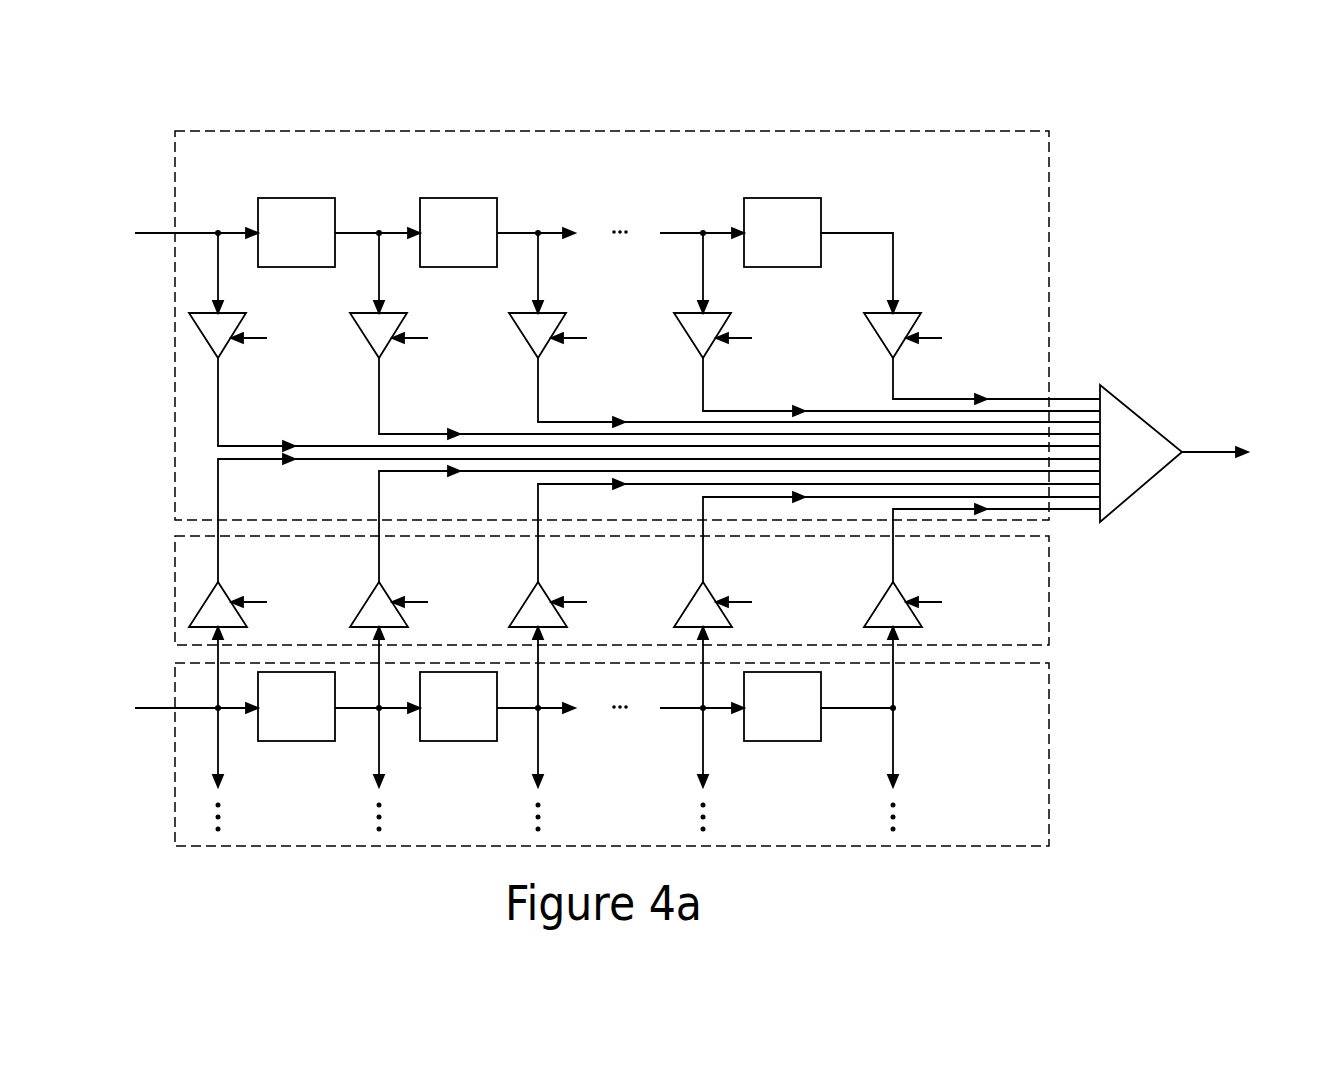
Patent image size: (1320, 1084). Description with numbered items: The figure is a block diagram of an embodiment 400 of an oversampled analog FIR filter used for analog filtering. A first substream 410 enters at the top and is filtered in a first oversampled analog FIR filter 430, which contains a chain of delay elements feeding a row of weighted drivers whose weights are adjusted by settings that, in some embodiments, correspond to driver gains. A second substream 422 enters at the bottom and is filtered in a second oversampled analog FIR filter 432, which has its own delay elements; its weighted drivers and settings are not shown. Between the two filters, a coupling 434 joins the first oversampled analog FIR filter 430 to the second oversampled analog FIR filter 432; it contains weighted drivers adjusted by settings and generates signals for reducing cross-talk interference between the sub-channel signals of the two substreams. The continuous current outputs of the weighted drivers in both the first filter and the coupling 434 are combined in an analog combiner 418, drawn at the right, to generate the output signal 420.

The embodiment of the oversampled analog FIR filter 400 is at (549, 103).
The first substream 410 is at (174, 232).
The analog combiner 418 is at (1140, 416).
The output signal 420 is at (1239, 455).
The second substream 422 is at (174, 707).
The first oversampled analog FIR filter 430 is at (1049, 170).
The second oversampled analog FIR filter 432 is at (1049, 702).
The coupling 434 is at (1049, 573).